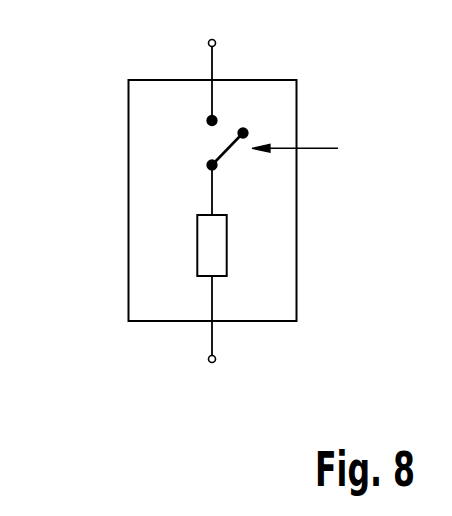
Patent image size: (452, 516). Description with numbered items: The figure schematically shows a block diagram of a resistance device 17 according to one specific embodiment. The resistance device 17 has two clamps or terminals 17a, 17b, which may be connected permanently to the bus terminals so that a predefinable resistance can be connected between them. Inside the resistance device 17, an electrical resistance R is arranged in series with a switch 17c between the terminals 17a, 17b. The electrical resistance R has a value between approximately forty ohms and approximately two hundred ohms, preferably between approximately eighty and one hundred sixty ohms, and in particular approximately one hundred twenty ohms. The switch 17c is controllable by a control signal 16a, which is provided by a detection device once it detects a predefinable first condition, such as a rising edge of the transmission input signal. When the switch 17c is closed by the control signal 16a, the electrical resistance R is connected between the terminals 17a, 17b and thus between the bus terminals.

The resistance device 17 is at (110, 150).
The terminal 17a is at (216, 43).
The terminal 17b is at (216, 359).
The switch 17c is at (205, 143).
The control signal 16a is at (322, 148).
The electrical resistance R is at (227, 247).